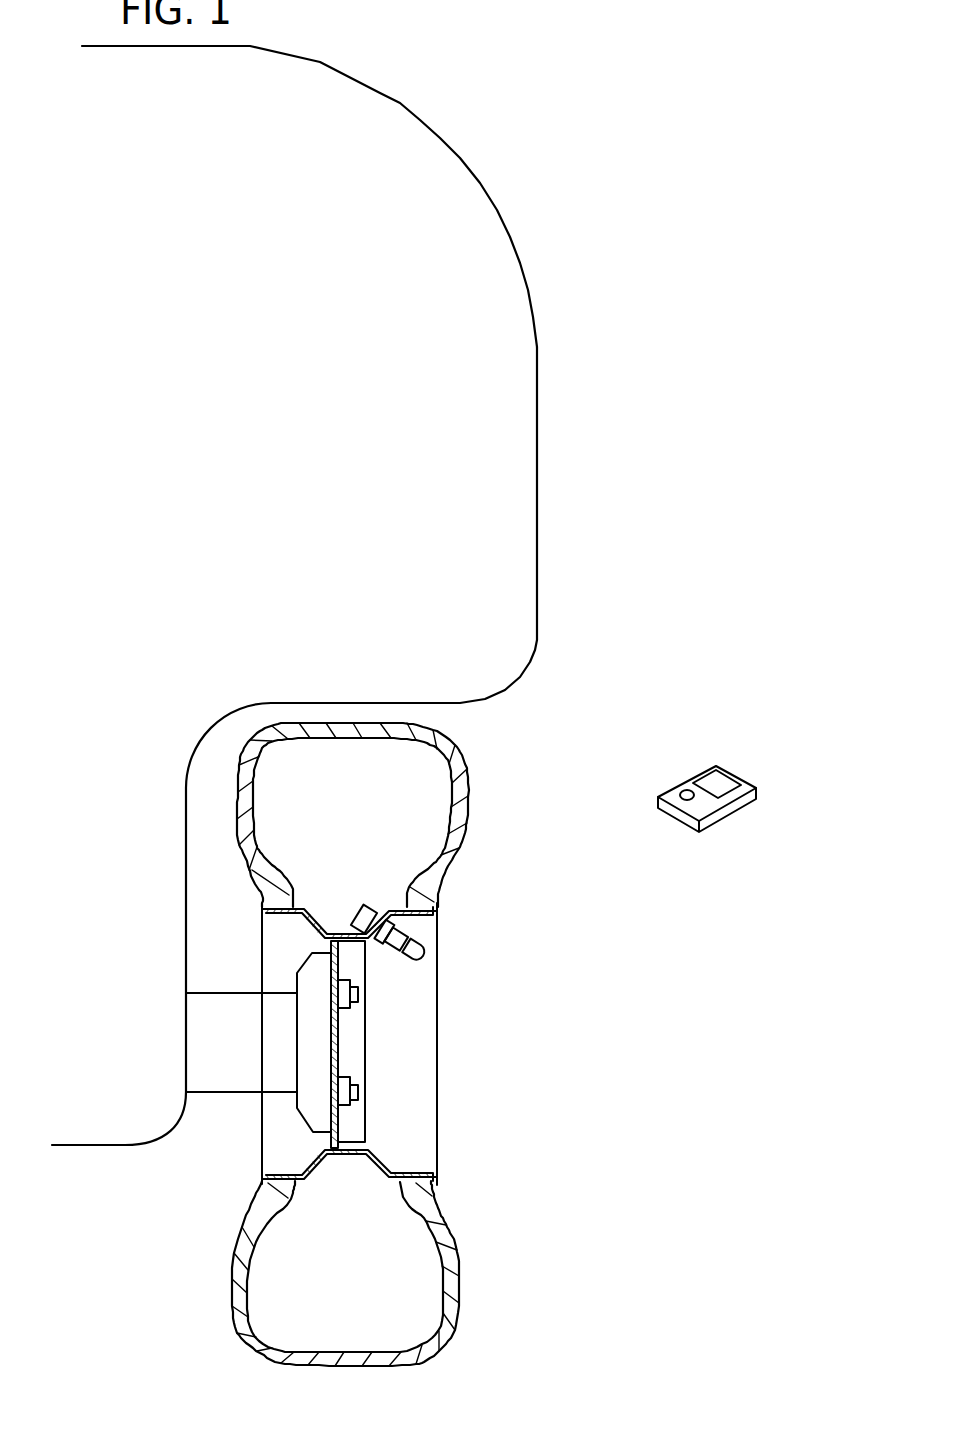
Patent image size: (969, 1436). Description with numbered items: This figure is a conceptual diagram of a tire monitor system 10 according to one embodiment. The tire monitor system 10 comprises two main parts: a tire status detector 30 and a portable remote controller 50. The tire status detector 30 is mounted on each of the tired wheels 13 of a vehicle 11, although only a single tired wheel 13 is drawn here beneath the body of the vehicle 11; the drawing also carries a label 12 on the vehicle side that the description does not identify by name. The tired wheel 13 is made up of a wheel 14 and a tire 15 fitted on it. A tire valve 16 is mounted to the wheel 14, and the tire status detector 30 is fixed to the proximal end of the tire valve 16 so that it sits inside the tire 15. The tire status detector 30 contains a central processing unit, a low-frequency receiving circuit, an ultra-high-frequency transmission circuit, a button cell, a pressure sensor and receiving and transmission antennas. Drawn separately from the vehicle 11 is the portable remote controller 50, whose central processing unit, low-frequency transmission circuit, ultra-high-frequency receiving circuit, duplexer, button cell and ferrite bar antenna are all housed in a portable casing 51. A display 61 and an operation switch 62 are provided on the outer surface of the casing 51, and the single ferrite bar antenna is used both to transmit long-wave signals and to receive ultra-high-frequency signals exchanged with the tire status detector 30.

The tire monitor system 10 is at (566, 772).
The vehicle 11 is at (575, 152).
The body side panel 12 is at (540, 490).
The tired wheel 13 is at (442, 1044).
The wheel 14 is at (438, 1137).
The tire 15 is at (455, 1238).
The tire valve 16 is at (401, 957).
The tire status detector 30 is at (368, 903).
The portable remote controller 50 is at (709, 783).
The portable casing 51 is at (748, 802).
The display 61 is at (730, 801).
The operation switch 62 is at (687, 800).